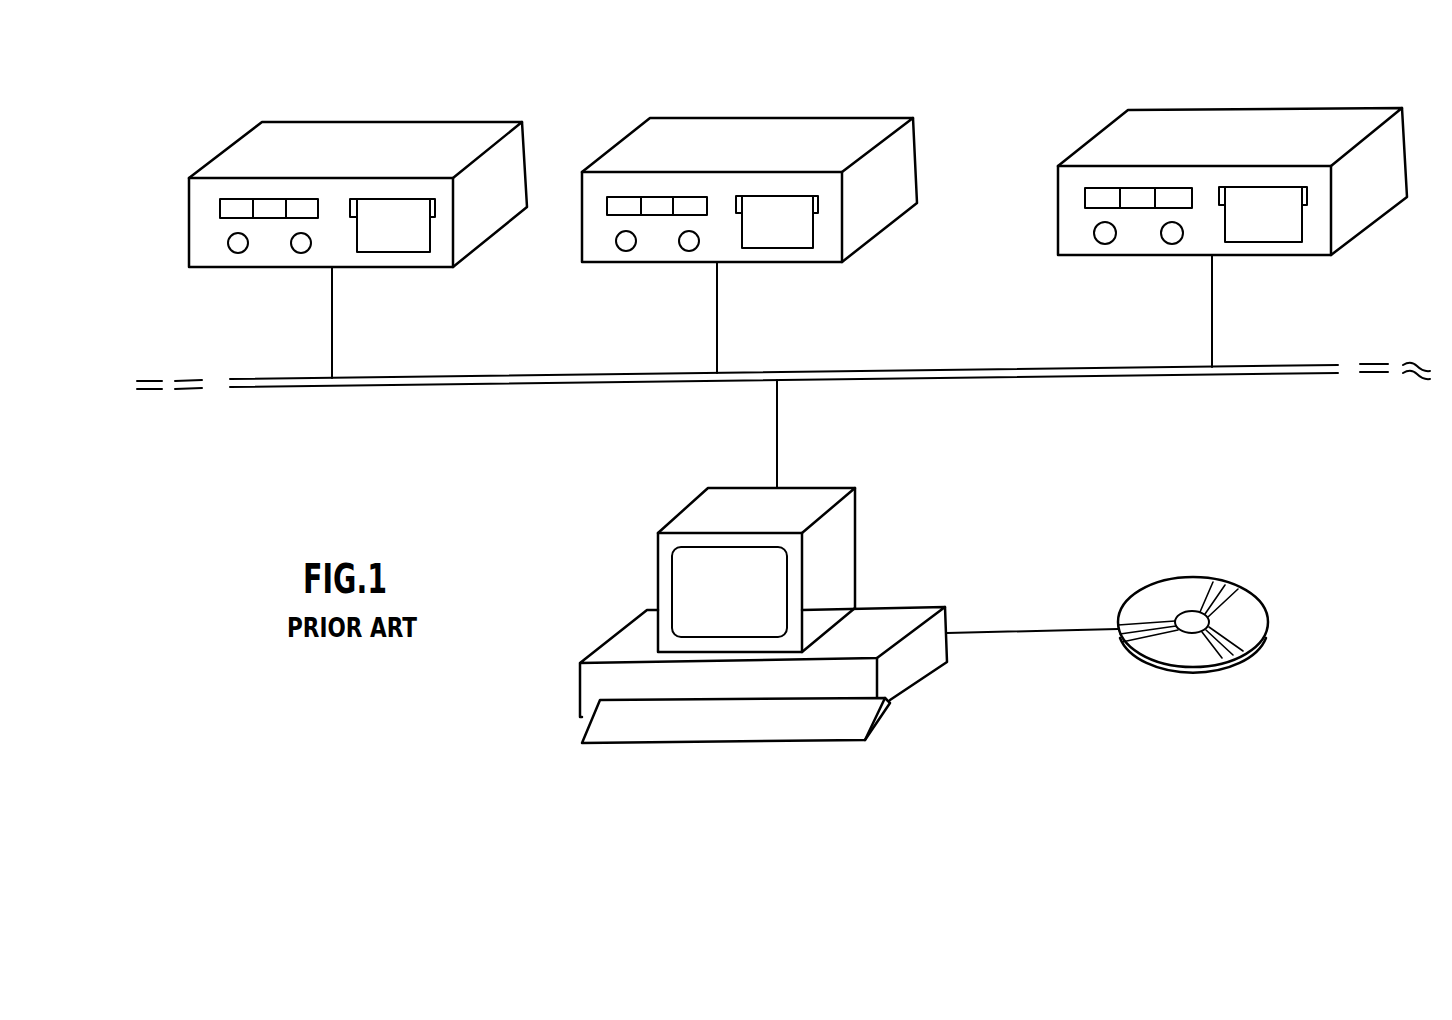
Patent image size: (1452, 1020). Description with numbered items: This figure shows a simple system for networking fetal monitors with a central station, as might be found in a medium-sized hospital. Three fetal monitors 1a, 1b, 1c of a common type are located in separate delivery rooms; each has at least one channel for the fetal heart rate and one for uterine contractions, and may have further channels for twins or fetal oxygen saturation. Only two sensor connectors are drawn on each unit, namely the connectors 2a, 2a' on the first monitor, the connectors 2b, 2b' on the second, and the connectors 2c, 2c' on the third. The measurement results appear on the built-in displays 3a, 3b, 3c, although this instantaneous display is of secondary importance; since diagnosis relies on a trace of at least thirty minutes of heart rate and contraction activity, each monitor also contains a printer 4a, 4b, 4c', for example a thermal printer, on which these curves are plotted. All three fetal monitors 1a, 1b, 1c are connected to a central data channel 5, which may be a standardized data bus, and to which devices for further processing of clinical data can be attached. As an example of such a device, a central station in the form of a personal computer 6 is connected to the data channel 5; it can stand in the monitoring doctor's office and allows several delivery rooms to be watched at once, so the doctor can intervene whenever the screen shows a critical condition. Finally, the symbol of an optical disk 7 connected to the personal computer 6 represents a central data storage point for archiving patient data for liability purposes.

The fetal monitor 1a is at (355, 131).
The fetal monitor 1b is at (733, 126).
The fetal monitor 1c is at (1218, 118).
The connector 2a is at (228, 273).
The connector 2a' is at (299, 273).
The connector 2b is at (622, 269).
The connector 2b' is at (695, 269).
The connector 2c is at (1107, 261).
The connector 2c' is at (1179, 261).
The built-in display 3a is at (228, 206).
The built-in display 3b is at (618, 204).
The built-in display 3c is at (1103, 196).
The printer 4a is at (394, 227).
The printer 4b is at (781, 224).
The printer 4c' is at (1263, 243).
The central data channel 5 is at (519, 382).
The personal computer 6 is at (892, 624).
The optical disk 7 is at (1245, 607).